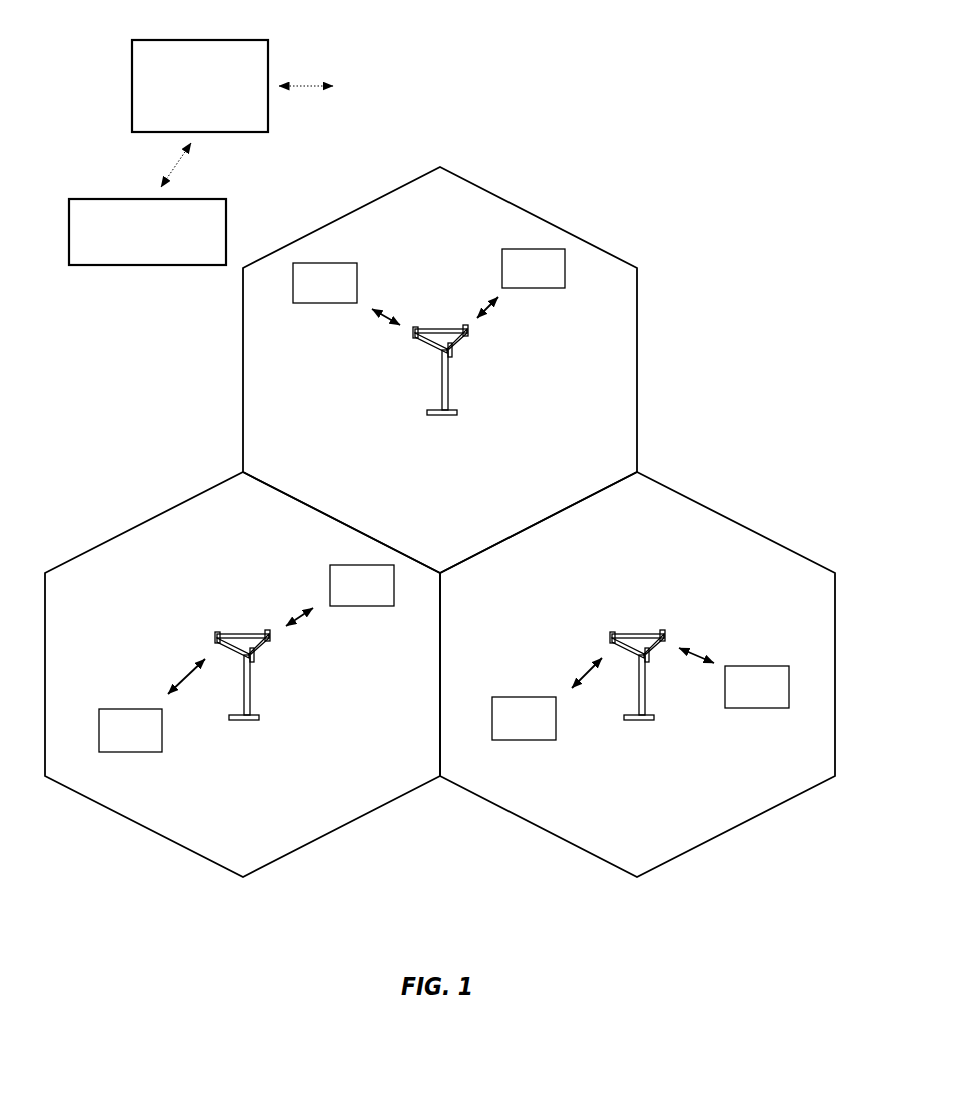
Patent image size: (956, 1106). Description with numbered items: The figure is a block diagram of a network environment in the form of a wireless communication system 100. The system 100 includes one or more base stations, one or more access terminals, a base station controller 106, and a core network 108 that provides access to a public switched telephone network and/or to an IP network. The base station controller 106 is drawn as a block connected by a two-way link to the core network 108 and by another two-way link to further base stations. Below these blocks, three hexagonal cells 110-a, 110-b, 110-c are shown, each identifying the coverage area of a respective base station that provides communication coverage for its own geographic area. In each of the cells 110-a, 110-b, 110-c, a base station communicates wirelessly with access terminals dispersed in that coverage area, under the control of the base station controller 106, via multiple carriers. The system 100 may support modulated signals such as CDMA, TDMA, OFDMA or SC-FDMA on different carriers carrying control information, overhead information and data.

The wireless communication system 100 is at (786, 165).
The base station controller 106 is at (160, 38).
The core network 108 is at (112, 198).
The cell 110-a is at (133, 528).
The cell 110-b is at (523, 209).
The cell 110-c is at (736, 522).